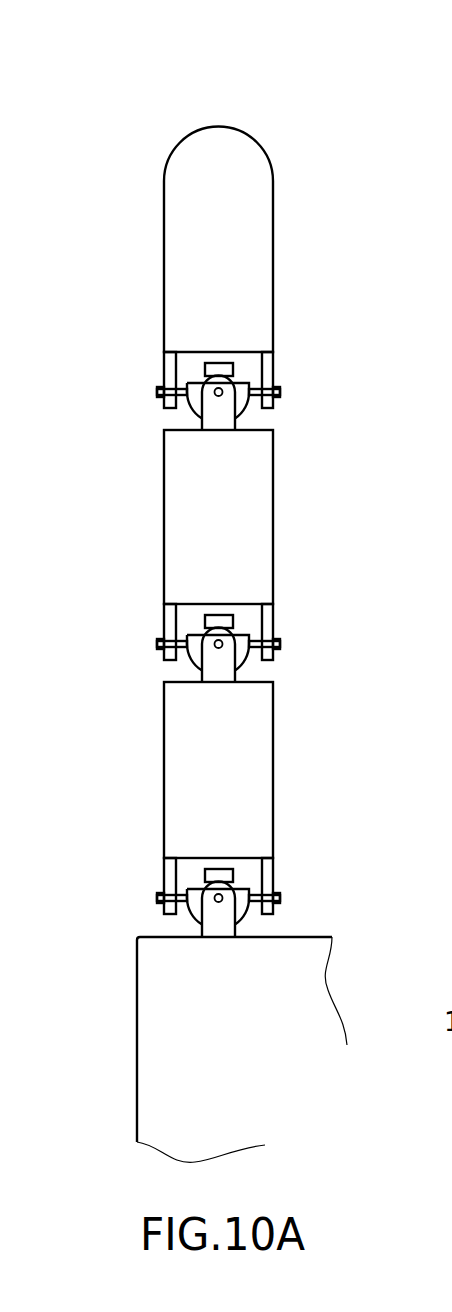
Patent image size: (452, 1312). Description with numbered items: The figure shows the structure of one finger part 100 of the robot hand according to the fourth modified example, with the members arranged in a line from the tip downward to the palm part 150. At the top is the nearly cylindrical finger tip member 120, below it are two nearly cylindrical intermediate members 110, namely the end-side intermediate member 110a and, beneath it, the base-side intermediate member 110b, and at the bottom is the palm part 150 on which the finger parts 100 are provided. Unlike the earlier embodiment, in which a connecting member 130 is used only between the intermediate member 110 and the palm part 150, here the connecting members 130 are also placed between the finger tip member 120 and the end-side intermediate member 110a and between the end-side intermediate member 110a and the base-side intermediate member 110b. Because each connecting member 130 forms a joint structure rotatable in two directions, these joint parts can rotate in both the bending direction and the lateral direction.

The finger part 100 is at (261, 98).
The finger tip member 120 is at (273, 218).
The intermediate member 110 is at (307, 637).
The end-side intermediate member 110a is at (274, 481).
The base-side intermediate member 110b is at (274, 736).
The connecting member 130 is at (193, 368).
The palm part 150 is at (137, 1022).